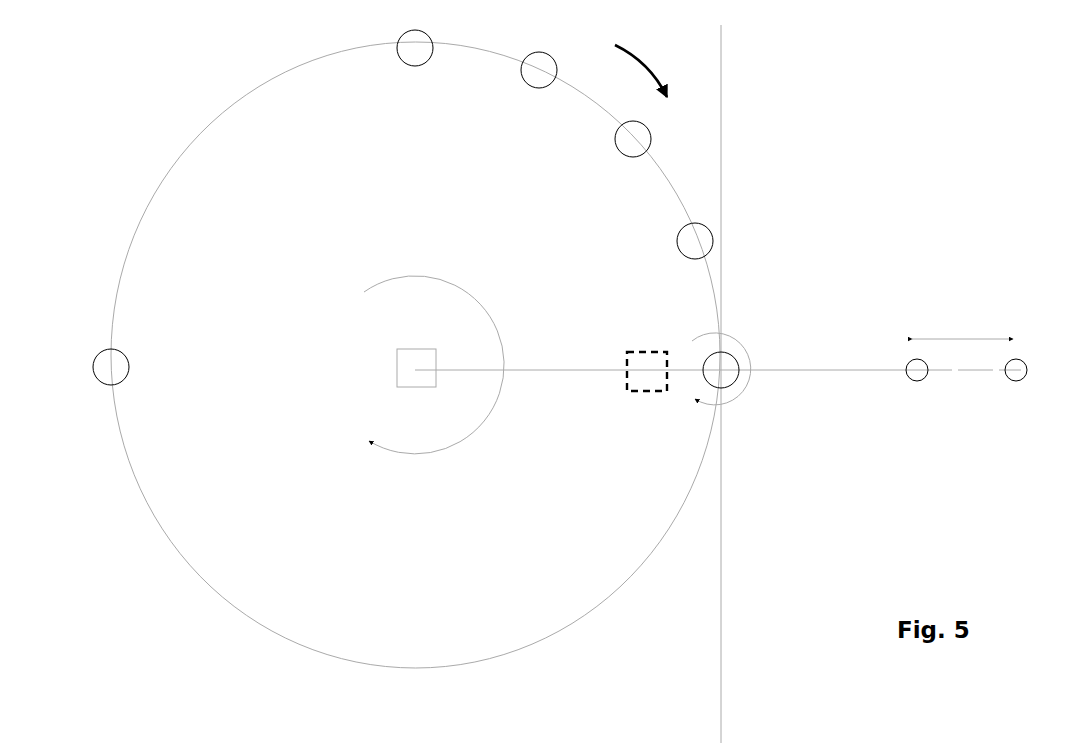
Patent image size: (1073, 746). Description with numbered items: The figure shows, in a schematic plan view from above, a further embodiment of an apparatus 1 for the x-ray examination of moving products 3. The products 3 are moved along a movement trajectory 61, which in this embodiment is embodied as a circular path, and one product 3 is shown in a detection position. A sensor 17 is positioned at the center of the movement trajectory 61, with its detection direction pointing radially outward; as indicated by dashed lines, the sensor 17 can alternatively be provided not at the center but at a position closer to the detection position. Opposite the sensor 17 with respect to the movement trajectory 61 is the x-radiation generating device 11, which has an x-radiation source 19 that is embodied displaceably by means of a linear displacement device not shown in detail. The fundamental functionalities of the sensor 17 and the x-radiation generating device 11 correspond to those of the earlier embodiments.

The apparatus 1 is at (785, 176).
The product 3 is at (414, 61).
The x-radiation generating device 11 is at (972, 413).
The sensor 17 is at (410, 369).
The x-radiation source 19 is at (916, 372).
The movement trajectory 61 is at (437, 668).